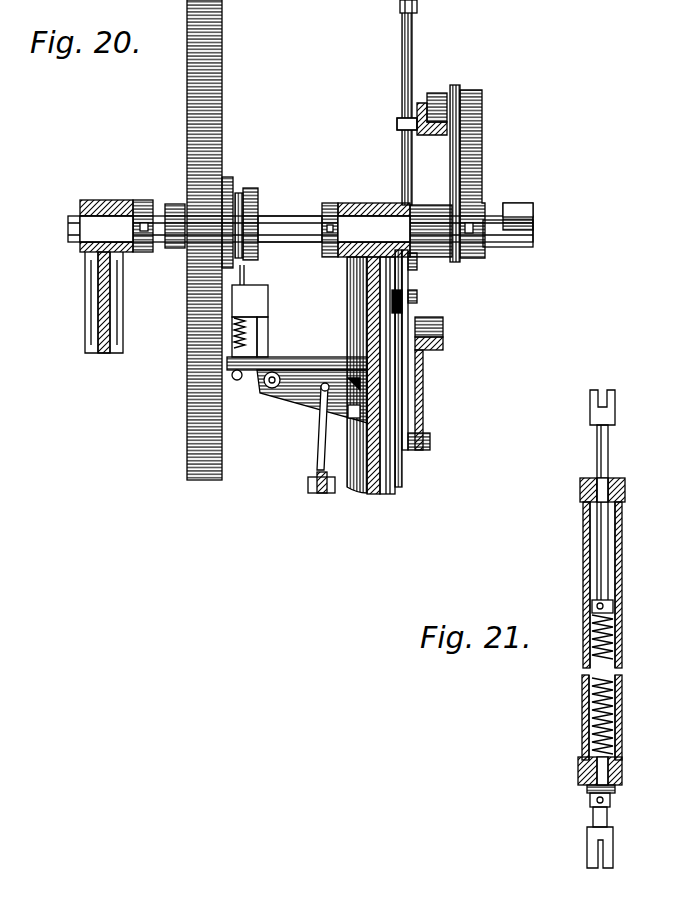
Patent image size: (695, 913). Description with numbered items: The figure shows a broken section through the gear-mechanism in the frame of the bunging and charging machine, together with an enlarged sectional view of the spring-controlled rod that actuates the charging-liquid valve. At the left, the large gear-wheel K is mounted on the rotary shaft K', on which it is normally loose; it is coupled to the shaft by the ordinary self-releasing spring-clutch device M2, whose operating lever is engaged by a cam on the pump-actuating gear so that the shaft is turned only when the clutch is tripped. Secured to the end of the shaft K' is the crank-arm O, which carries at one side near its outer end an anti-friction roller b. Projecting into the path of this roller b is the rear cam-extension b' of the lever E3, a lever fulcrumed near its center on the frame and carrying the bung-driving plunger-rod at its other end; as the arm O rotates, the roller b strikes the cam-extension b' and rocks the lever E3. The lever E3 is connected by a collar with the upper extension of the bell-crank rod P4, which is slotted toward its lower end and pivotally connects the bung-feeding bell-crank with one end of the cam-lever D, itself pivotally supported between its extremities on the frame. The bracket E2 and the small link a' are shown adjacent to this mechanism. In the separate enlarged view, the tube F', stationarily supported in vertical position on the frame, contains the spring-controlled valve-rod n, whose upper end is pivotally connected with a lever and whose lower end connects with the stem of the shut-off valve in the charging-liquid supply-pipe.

In FIG. 20, the gear-wheel K is at (223, 240).
In FIG. 20, the rotary shaft K' is at (290, 209).
In FIG. 20, the self-releasing spring-clutch device M2 is at (297, 337).
In FIG. 20, the bell-crank rod P4 is at (402, 43).
In FIG. 20, the lever E3 is at (412, 135).
In FIG. 20, the anti-friction roller b is at (437, 87).
In FIG. 20, the cam-extension b' is at (432, 138).
In FIG. 20, the crank-arm O is at (473, 170).
In FIG. 20, the cam-lever D is at (393, 310).
In FIG. 20, the bracket E2 is at (423, 378).
In FIG. 20, the lever with nut a' is at (318, 459).
In FIG. 21, the spring-controlled valve-rod n is at (610, 453).
In FIG. 21, the tube F' is at (615, 635).